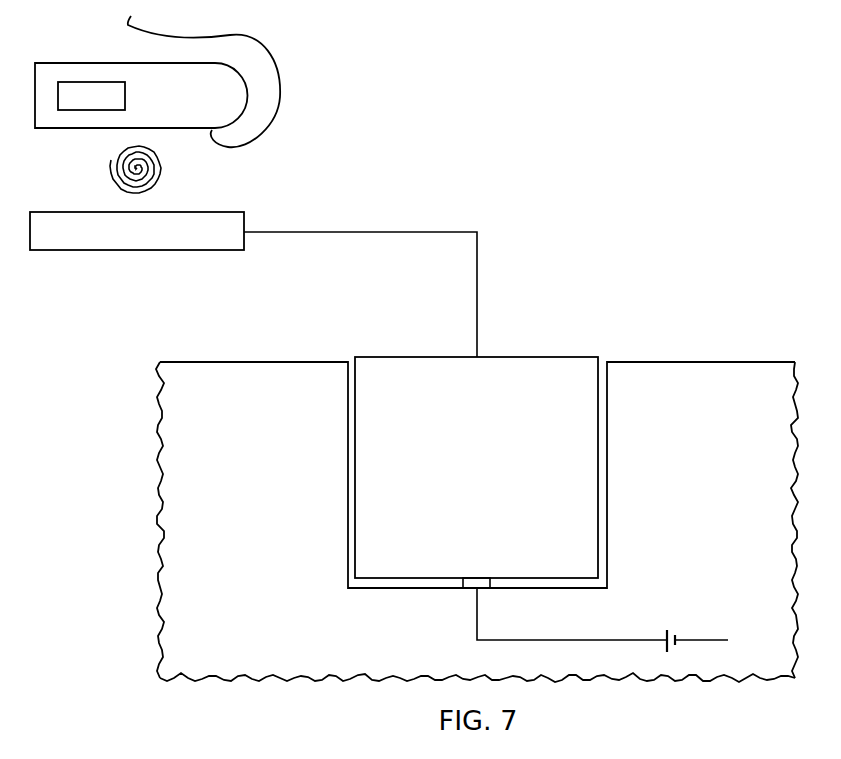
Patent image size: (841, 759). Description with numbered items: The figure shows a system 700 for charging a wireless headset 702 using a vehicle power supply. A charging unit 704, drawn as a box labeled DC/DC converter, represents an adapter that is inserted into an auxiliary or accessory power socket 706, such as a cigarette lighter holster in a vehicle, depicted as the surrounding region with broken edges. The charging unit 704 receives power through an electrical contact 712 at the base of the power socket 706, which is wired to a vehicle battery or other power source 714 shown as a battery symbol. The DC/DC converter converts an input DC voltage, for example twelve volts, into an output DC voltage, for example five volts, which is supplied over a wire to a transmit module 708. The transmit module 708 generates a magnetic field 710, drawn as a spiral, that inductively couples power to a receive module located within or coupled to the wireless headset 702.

The system 700 is at (662, 67).
The wireless headset 702 is at (92, 63).
The charging unit 704 is at (538, 353).
The power socket 706 is at (610, 475).
The transmit module 708 is at (138, 253).
The magnetic field 710 is at (108, 172).
The electrical contact 712 is at (468, 578).
The vehicle battery or other power source 714 is at (670, 627).